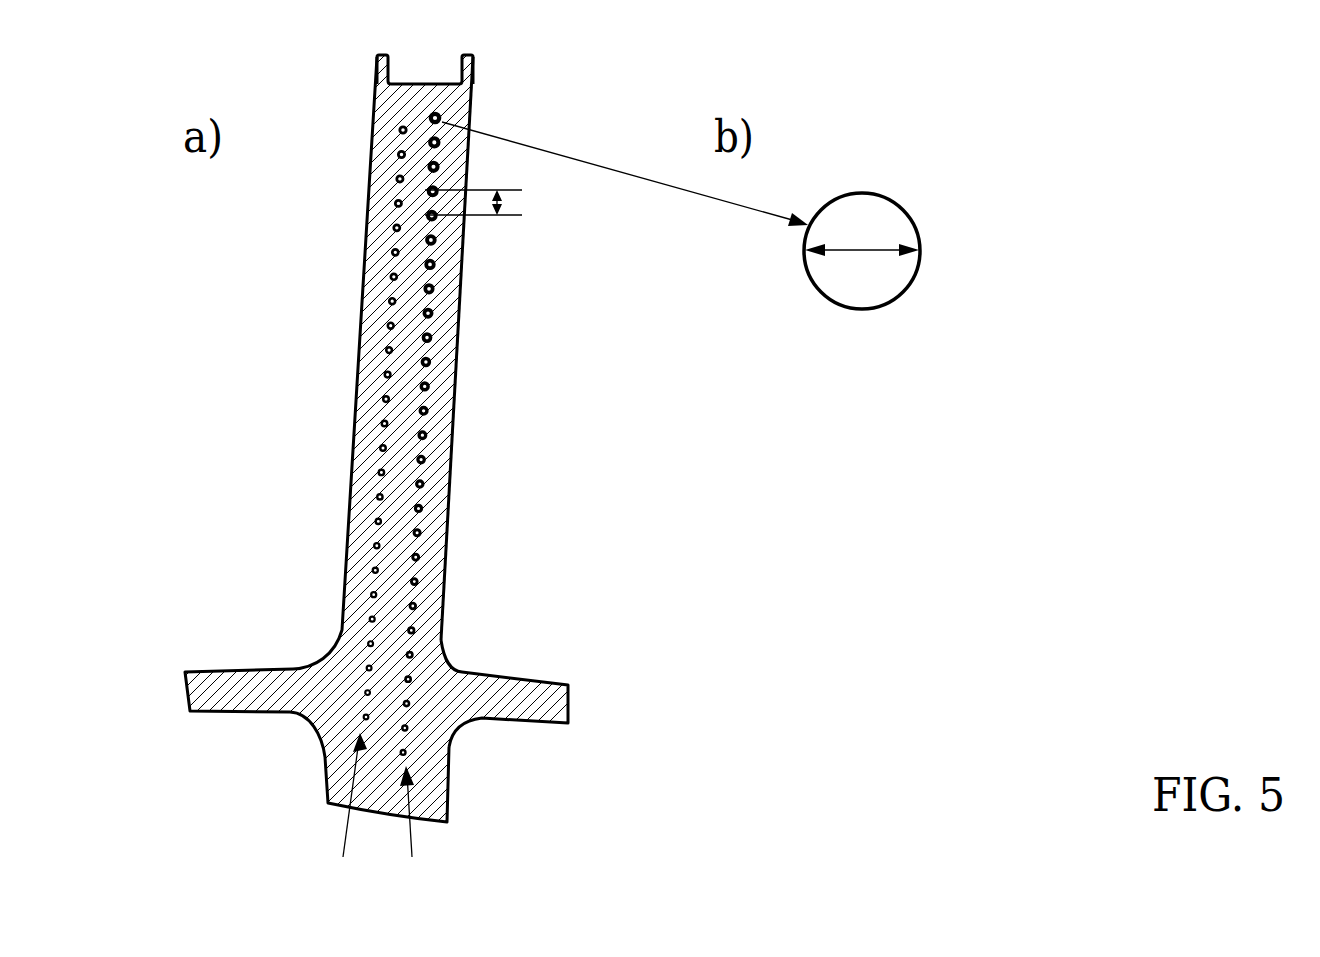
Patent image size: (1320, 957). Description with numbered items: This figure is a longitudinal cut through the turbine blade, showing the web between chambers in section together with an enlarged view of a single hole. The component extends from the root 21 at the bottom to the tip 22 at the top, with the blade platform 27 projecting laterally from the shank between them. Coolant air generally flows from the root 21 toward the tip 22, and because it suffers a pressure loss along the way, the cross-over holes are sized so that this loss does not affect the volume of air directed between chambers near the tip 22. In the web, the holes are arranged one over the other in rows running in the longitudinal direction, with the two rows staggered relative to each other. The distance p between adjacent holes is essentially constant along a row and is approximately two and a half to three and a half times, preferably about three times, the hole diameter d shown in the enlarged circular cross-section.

The root 21 is at (503, 731).
The tip 22 is at (482, 81).
The blade platform 27 is at (568, 687).